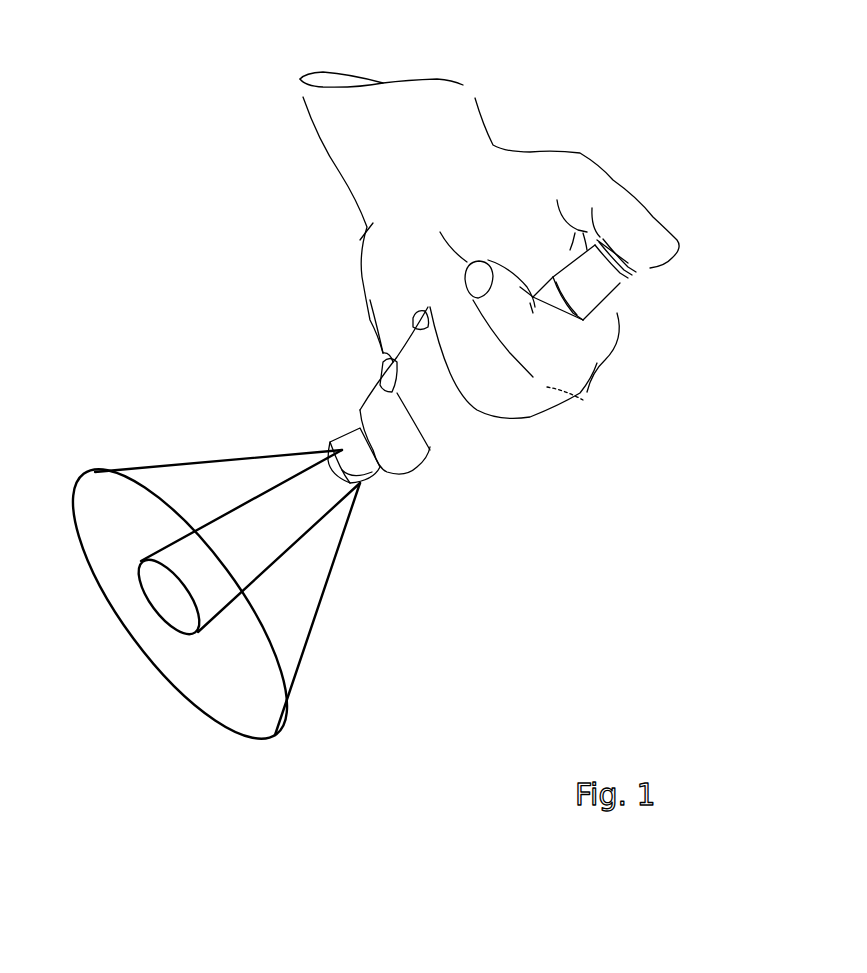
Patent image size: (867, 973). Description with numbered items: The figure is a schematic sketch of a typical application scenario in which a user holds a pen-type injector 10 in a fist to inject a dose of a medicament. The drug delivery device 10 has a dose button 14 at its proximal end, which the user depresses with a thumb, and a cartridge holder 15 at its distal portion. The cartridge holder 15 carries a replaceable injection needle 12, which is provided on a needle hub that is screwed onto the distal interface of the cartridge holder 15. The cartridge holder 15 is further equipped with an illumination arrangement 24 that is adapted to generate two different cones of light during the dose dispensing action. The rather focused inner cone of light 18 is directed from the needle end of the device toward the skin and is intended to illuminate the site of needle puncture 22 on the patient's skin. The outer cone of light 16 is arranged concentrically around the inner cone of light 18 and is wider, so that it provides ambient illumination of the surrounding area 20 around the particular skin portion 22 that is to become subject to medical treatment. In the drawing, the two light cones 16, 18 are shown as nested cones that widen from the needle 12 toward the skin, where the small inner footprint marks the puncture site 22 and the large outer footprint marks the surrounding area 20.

The pen-type injector 10 is at (491, 321).
The injection needle 12 is at (310, 493).
The dose button 14 is at (600, 293).
The cartridge holder 15 is at (370, 467).
The outer cone of light 16 is at (250, 617).
The inner cone of light 18 is at (254, 547).
The surrounding area 20 is at (215, 698).
The site of needle puncture 22 is at (167, 597).
The illumination arrangement 24 is at (336, 418).